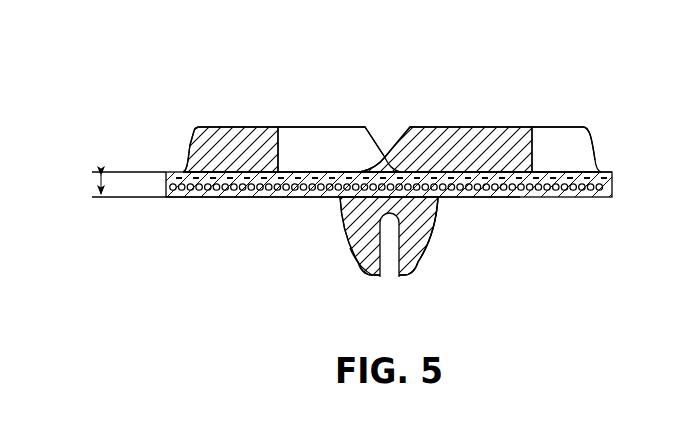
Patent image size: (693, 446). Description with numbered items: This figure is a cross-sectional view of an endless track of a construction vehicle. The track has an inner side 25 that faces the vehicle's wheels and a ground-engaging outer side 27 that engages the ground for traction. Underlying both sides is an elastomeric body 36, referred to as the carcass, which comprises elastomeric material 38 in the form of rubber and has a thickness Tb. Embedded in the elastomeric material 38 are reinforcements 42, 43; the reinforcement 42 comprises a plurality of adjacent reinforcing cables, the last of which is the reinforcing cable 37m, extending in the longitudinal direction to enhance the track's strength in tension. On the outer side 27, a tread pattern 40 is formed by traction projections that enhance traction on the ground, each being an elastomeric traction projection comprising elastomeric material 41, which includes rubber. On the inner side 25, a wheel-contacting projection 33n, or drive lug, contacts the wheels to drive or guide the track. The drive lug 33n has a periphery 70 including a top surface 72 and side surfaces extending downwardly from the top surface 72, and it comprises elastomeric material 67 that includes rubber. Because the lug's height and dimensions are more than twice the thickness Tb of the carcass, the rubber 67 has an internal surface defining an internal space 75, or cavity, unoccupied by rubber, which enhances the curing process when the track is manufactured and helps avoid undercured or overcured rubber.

The inner side 25 is at (238, 226).
The ground-engaging outer side 27 is at (237, 102).
The tread pattern 40 is at (499, 118).
The elastomeric material 41 is at (205, 126).
The reinforcement 43 is at (590, 172).
The reinforcement 42 is at (614, 182).
The elastomeric body 36 is at (163, 186).
The thickness of the carcass Tb is at (84, 182).
The reinforcing cable 37m is at (598, 191).
The elastomeric material 38 is at (537, 198).
The wheel-contacting projection 33n is at (425, 280).
The elastomeric material 67 is at (418, 243).
The periphery 70 is at (352, 263).
The top surface 72 is at (370, 277).
The internal space 75 is at (388, 260).